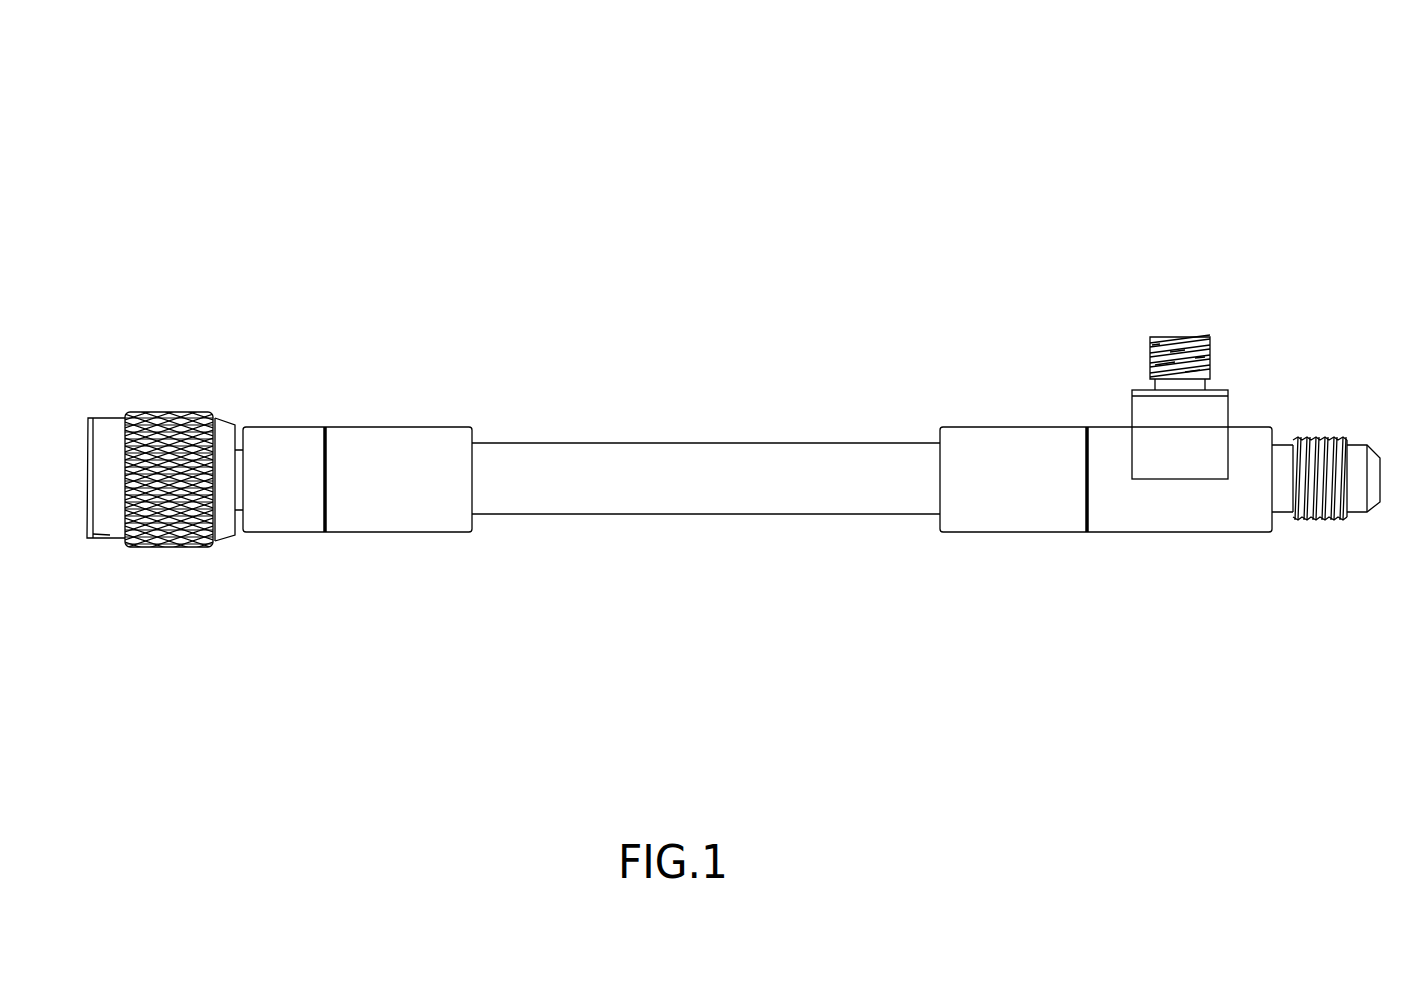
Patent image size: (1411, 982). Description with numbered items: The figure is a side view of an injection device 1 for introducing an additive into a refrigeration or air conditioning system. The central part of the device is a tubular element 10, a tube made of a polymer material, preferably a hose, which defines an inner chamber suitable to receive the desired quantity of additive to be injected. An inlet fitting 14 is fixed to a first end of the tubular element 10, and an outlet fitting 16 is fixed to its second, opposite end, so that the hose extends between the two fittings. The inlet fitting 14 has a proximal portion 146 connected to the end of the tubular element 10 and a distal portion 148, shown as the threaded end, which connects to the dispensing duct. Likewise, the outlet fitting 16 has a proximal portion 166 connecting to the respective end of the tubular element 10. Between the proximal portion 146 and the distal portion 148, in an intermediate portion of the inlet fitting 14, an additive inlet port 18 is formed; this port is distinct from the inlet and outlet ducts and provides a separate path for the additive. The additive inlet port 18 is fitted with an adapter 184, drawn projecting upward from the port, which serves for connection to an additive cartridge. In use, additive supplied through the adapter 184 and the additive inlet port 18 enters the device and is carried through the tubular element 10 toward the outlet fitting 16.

The injection device 1 is at (751, 158).
The tubular element 10 is at (705, 440).
The inlet fitting 14 is at (1172, 567).
The outlet fitting 16 is at (354, 567).
The additive inlet port 18 is at (1246, 394).
The proximal portion 146 is at (1000, 435).
The distal portion 148 is at (1345, 440).
The proximal portion 166 is at (370, 427).
The adapter 184 is at (1188, 337).